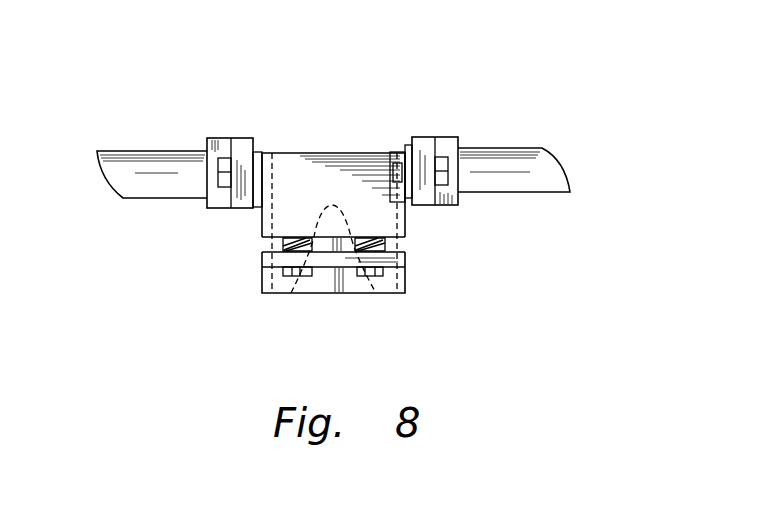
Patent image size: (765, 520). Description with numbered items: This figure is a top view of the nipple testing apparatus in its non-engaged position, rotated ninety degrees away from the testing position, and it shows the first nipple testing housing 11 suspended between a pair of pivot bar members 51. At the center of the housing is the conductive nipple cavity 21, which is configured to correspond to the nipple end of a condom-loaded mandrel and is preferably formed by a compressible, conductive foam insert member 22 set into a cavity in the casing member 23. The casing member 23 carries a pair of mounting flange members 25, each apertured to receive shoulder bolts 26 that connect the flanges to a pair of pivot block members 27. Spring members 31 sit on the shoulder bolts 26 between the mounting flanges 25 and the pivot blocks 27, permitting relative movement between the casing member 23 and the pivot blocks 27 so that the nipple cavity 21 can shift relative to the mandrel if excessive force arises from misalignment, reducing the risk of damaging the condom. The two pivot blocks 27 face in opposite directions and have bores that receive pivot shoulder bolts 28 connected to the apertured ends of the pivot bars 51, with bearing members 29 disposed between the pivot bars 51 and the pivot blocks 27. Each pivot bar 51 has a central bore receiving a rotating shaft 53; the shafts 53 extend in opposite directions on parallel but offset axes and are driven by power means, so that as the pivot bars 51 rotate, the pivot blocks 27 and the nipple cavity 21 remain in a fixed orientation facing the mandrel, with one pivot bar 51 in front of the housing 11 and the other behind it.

The first nipple testing housing 11 is at (380, 109).
The conductive nipple cavity 21 is at (374, 293).
The conductive foam insert member 22 is at (272, 210).
The casing member 23 is at (405, 288).
The mounting flange members 25 is at (405, 260).
The shoulder bolts 26 is at (283, 272).
The pivot block members 27 is at (350, 172).
The pivot shoulder bolts 28 is at (395, 147).
The bearing members 29 is at (262, 150).
The spring members 31 is at (283, 246).
The pivot bar members 51 is at (240, 140).
The rotating shaft 53 is at (168, 160).